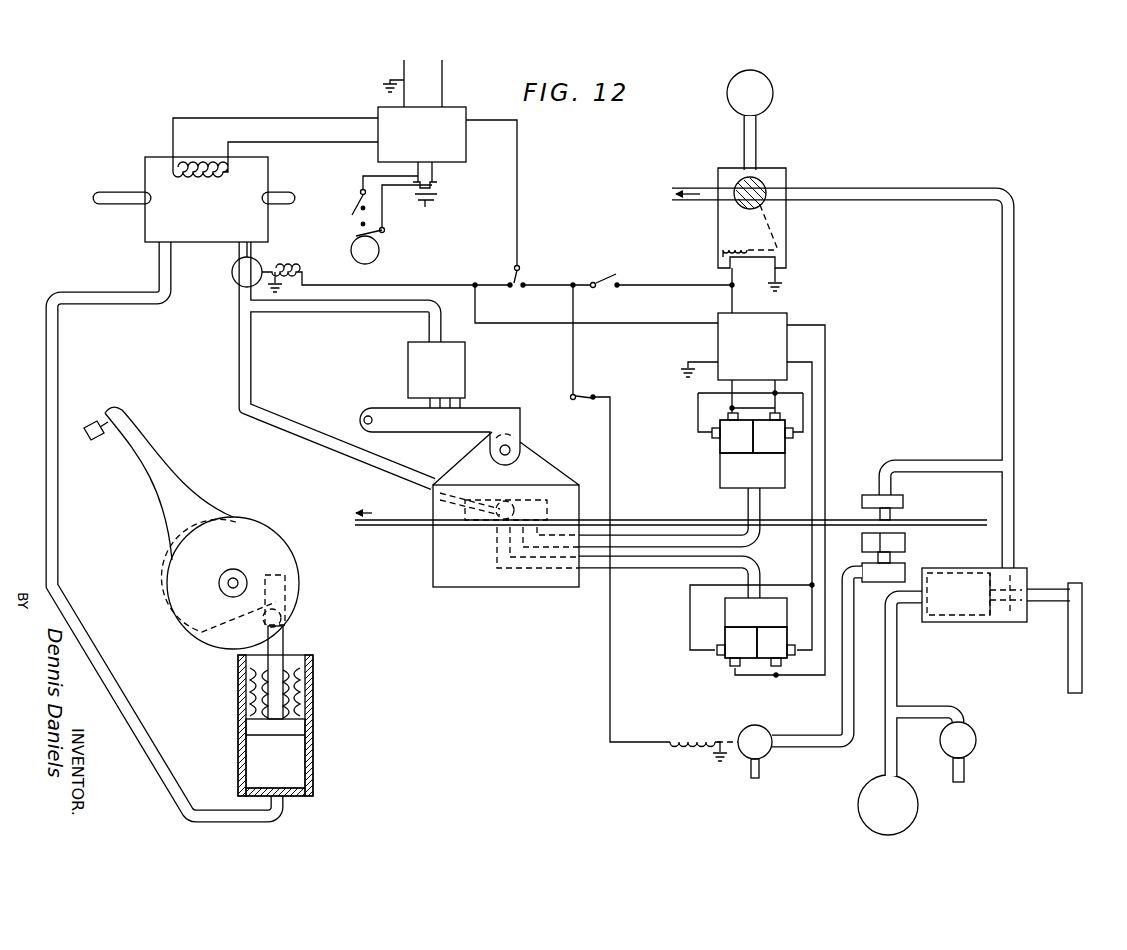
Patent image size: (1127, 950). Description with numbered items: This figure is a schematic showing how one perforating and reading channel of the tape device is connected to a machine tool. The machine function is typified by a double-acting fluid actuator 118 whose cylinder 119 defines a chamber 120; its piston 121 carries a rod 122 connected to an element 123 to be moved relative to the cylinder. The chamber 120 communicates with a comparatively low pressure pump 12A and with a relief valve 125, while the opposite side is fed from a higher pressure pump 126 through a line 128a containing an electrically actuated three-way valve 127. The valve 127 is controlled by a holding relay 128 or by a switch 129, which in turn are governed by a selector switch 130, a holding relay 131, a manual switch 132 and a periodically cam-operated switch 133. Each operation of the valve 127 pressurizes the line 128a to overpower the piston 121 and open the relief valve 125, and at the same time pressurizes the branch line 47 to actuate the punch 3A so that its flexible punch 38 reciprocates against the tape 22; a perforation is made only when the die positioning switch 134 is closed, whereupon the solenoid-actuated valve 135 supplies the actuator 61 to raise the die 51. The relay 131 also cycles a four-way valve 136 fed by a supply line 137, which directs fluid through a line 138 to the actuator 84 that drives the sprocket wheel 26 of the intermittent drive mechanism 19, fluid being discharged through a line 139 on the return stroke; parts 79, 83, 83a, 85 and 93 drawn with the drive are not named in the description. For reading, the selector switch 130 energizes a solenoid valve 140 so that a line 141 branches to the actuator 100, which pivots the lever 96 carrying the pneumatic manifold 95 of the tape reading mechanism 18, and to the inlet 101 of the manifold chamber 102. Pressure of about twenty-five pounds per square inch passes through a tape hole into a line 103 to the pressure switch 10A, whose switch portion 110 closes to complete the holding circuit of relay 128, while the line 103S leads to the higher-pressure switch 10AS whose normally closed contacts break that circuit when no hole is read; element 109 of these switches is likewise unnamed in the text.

The fluid pressure actuated punch 3A is at (900, 502).
The pressure switch 10A is at (717, 464).
The pressure-actuated switch 10AS is at (721, 611).
The low pressure source of fluid pressure 12A is at (912, 810).
The tape reading mechanism 18 is at (542, 452).
The intermittent drive mechanism 19 is at (214, 660).
The tape 22 is at (838, 519).
The sprocket wheel 26 is at (178, 612).
The flexible punch 38 is at (890, 513).
The fluid pressure branch line 47 is at (936, 462).
The die 51 is at (905, 542).
The actuator 61 is at (878, 584).
The wheel hub 79 is at (236, 575).
The brake pad 83 is at (186, 588).
The brake shoe arm 83a is at (148, 485).
The actuator 84 is at (314, 766).
The roller 85 is at (286, 612).
The sensor 93 is at (95, 443).
The pneumatic manifold 95 is at (552, 470).
The lever 96 is at (480, 410).
The actuator 100 is at (460, 358).
The inlet 101 is at (498, 514).
The manifold chamber 102 is at (533, 500).
The line 103 is at (628, 538).
The line 103S is at (651, 570).
The solenoid 109 is at (724, 437).
The switch portion 110 is at (778, 448).
The double-acting fluid actuator 118 is at (1023, 626).
The cylinder 119 is at (962, 622).
The chamber 120 is at (938, 615).
The piston 121 is at (993, 622).
The rod 122 is at (1048, 590).
The element 123 is at (1086, 690).
The relief valve 125 is at (976, 736).
The higher source of fluid pressure 126 is at (774, 95).
The electrically actuated three-way valve 127 is at (790, 228).
The holding relay 128 is at (786, 320).
The line 128a is at (1001, 311).
The switch 129 is at (616, 274).
The selector switch 130 is at (525, 268).
The holding relay 131 is at (378, 105).
The manual switch 132 is at (433, 201).
The periodically cam-operated switch 133 is at (385, 242).
The die positioning switch 134 is at (575, 397).
The solenoid-actuated valve 135 is at (742, 730).
The four-way valve 136 is at (261, 180).
The supply line 137 is at (113, 192).
The line 138 is at (58, 364).
The line 139 is at (280, 192).
The solenoid valve 140 is at (258, 262).
The line 141 is at (239, 352).